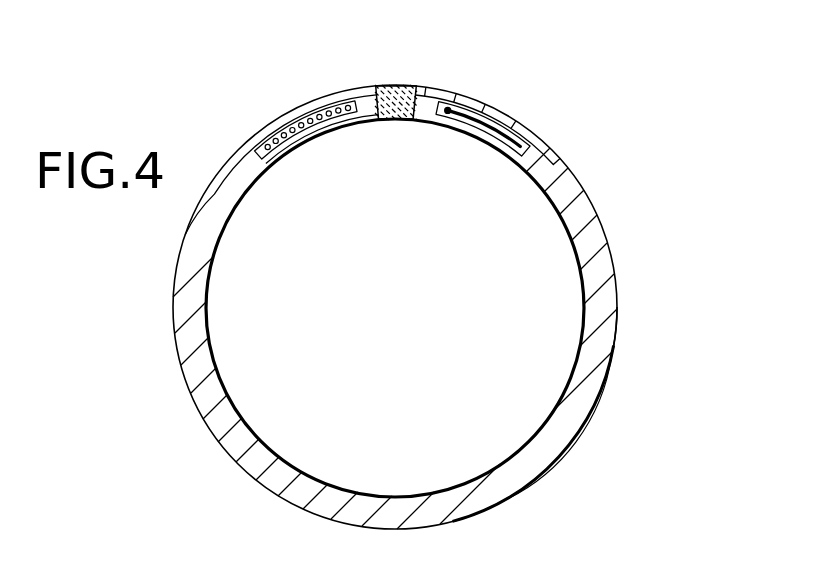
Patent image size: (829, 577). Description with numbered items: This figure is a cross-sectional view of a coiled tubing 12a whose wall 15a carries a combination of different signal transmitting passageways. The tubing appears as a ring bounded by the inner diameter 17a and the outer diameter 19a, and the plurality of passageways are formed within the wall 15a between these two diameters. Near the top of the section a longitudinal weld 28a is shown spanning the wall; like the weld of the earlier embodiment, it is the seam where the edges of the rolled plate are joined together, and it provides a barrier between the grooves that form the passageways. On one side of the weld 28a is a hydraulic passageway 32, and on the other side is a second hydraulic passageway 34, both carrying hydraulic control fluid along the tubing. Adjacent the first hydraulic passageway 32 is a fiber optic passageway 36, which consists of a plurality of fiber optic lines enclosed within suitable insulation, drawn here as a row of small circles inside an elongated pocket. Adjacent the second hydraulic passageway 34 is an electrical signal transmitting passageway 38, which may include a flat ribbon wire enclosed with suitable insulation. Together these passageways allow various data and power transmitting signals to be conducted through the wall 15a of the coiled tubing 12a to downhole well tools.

The coiled tubing 12a is at (597, 212).
The wall 15a is at (600, 292).
The inner diameter 17a is at (243, 200).
The outer diameter 19a is at (553, 165).
The longitudinal weld 28a is at (392, 85).
The hydraulic passageway 32 is at (360, 95).
The hydraulic passageway 34 is at (432, 95).
The fiber optic passageway 36 is at (270, 137).
The electrical signal transmitting passageway 38 is at (500, 121).